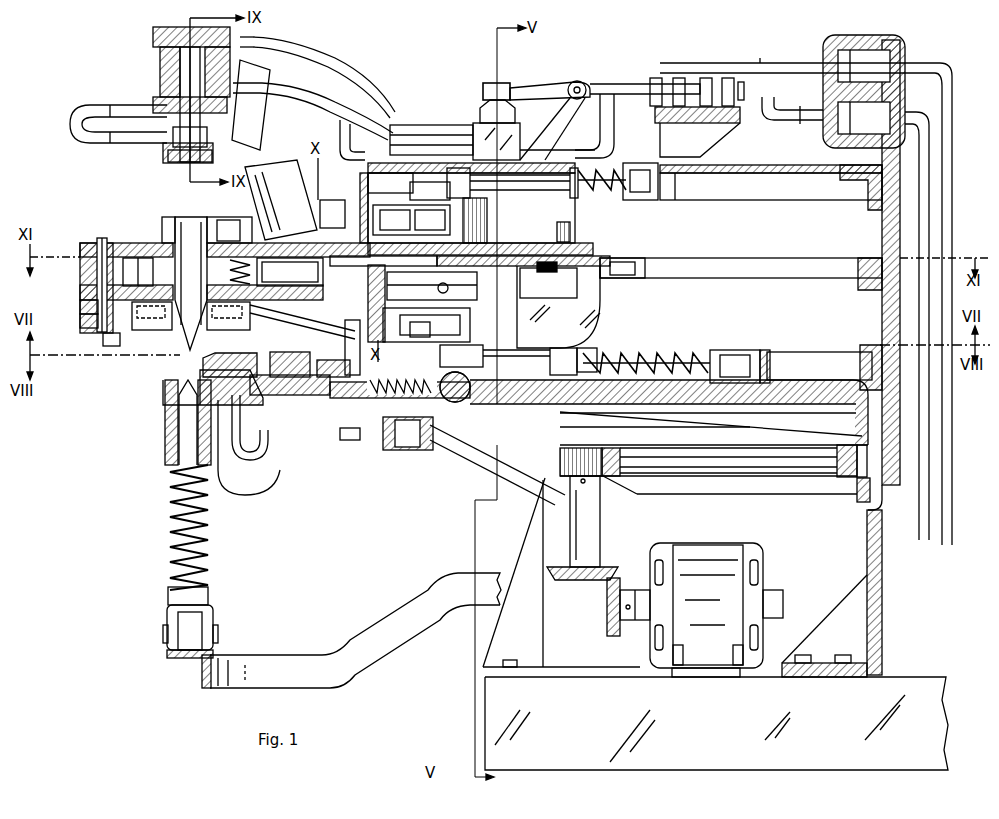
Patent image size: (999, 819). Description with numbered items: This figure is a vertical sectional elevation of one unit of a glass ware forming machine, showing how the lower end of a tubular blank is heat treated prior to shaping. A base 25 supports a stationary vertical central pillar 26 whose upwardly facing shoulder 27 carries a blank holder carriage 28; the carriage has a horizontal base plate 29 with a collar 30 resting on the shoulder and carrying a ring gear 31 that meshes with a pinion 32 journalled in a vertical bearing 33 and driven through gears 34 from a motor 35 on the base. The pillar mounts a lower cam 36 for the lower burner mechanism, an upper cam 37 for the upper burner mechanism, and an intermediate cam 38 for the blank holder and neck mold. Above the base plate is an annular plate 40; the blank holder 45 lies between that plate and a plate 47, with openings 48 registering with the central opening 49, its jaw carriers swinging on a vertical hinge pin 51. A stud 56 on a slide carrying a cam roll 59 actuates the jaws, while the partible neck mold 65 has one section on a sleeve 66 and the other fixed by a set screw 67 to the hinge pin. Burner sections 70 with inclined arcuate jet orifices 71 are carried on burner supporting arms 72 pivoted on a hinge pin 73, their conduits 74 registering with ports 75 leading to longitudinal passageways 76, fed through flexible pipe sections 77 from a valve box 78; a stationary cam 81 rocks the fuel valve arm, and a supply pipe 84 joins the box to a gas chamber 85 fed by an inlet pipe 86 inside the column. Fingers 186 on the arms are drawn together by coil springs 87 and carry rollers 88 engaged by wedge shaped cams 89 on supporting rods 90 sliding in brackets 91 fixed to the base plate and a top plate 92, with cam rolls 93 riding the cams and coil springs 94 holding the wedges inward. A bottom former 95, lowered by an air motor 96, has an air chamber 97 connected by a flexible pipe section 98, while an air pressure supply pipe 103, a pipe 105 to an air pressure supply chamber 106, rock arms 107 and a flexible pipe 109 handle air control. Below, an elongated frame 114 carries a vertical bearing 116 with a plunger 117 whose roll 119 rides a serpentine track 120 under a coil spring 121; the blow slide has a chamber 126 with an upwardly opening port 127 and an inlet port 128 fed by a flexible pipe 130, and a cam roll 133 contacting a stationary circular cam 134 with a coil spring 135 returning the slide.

The base 25 is at (715, 624).
The vertical central pillar 26 is at (884, 568).
The upwardly facing shoulder 27 is at (880, 535).
The blank holder carriage 28 is at (375, 437).
The base plate 29 is at (599, 411).
The collar 30 is at (862, 422).
The ring gear 31 is at (628, 456).
The pinion 32 is at (560, 482).
The vertical bearing 33 is at (600, 537).
The gears 34 is at (605, 592).
The motor 35 is at (728, 566).
The lower cam 36 is at (840, 355).
The upper cam 37 is at (712, 195).
The intermediate stationary cam 38 is at (752, 268).
The annular plate 40 is at (512, 245).
The blank holder 45 is at (155, 241).
The plate 47 is at (300, 263).
The vertically aligned openings 48 is at (145, 272).
The central opening 49 is at (229, 272).
The vertical hinge pin 51 is at (102, 240).
The stud 56 is at (592, 325).
The cam roll 59 is at (633, 260).
The partible neck mold 65 is at (103, 340).
The sleeve 66 is at (80, 310).
The set screw 67 is at (80, 325).
The burner sections 70 is at (232, 222).
The arcuate jet orifices 71 is at (213, 222).
The burner supporting arms 72 is at (305, 205).
The vertical hinge pin 73 is at (357, 348).
The conduits 74 is at (295, 326).
The ports 75 is at (312, 392).
The longitudinal passageways 76 is at (330, 204).
The flexible pipe sections 77 is at (392, 128).
The valve box 78 is at (472, 120).
The stationary cam 81 is at (730, 120).
The supply pipe 84 is at (778, 122).
The gas chamber 85 is at (864, 140).
The inlet pipe 86 is at (916, 520).
The coil springs 87 is at (425, 345).
The rollers 88 is at (510, 333).
The wedge shaped cams 89 is at (548, 337).
The supporting rods 90 is at (520, 190).
The brackets 91 is at (568, 190).
The top plate 92 is at (617, 155).
The cam rolls 93 is at (645, 192).
The coil springs 94 is at (598, 192).
The bottom former 95 is at (213, 155).
The air motor 96 is at (158, 45).
The air chamber 97 is at (207, 137).
The flexible pipe section 98 is at (70, 124).
The air pressure supply pipe 103 is at (340, 57).
The pipe 105 is at (738, 60).
The air pressure supply chamber 106 is at (828, 48).
The rock arms 107 is at (518, 84).
The flexible pipe 109 is at (312, 92).
The elongated frame 114 is at (160, 403).
The vertical bearing 116 is at (170, 443).
The plunger 117 is at (188, 425).
The roll 119 is at (180, 618).
The serpentine track 120 is at (185, 660).
The coil spring 121 is at (178, 492).
The chamber 126 is at (290, 392).
The upwardly opening port 127 is at (276, 440).
The inlet port 128 is at (296, 442).
The flexible pipe 130 is at (255, 458).
The cam roll 133 is at (340, 435).
The stationary circular cam 134 is at (392, 450).
The coil spring 135 is at (412, 392).
The fingers 186 is at (405, 346).